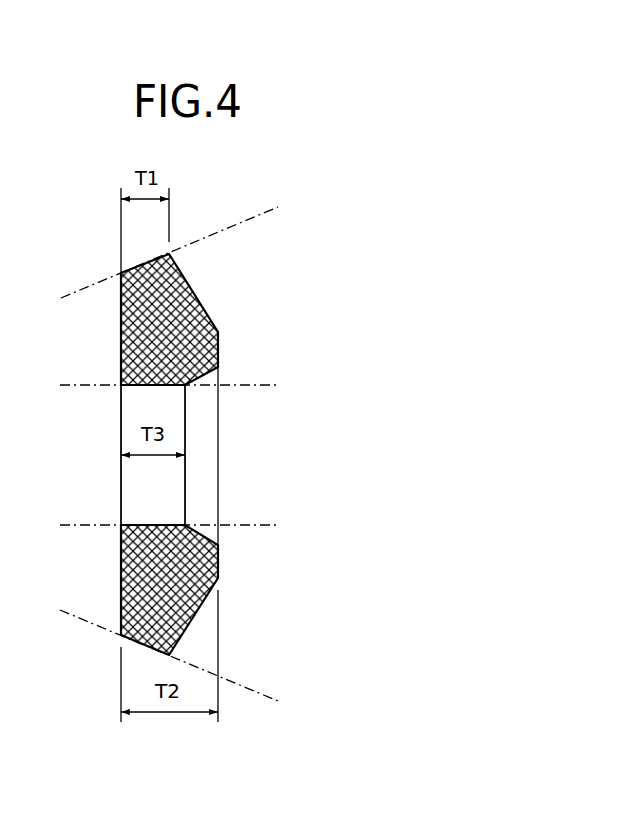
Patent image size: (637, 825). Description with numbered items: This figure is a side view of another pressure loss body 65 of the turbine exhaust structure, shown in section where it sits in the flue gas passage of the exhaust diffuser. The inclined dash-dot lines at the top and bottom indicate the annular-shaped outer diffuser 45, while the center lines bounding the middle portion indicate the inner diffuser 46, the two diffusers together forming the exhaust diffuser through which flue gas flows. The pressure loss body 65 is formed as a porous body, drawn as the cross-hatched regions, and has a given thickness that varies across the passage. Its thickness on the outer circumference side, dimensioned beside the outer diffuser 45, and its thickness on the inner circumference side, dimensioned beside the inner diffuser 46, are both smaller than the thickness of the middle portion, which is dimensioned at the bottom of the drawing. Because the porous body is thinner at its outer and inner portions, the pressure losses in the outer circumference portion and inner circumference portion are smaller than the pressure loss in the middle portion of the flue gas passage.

The outer diffuser 45 is at (248, 220).
The inner diffuser 46 is at (252, 385).
The pressure loss body 65 is at (195, 287).